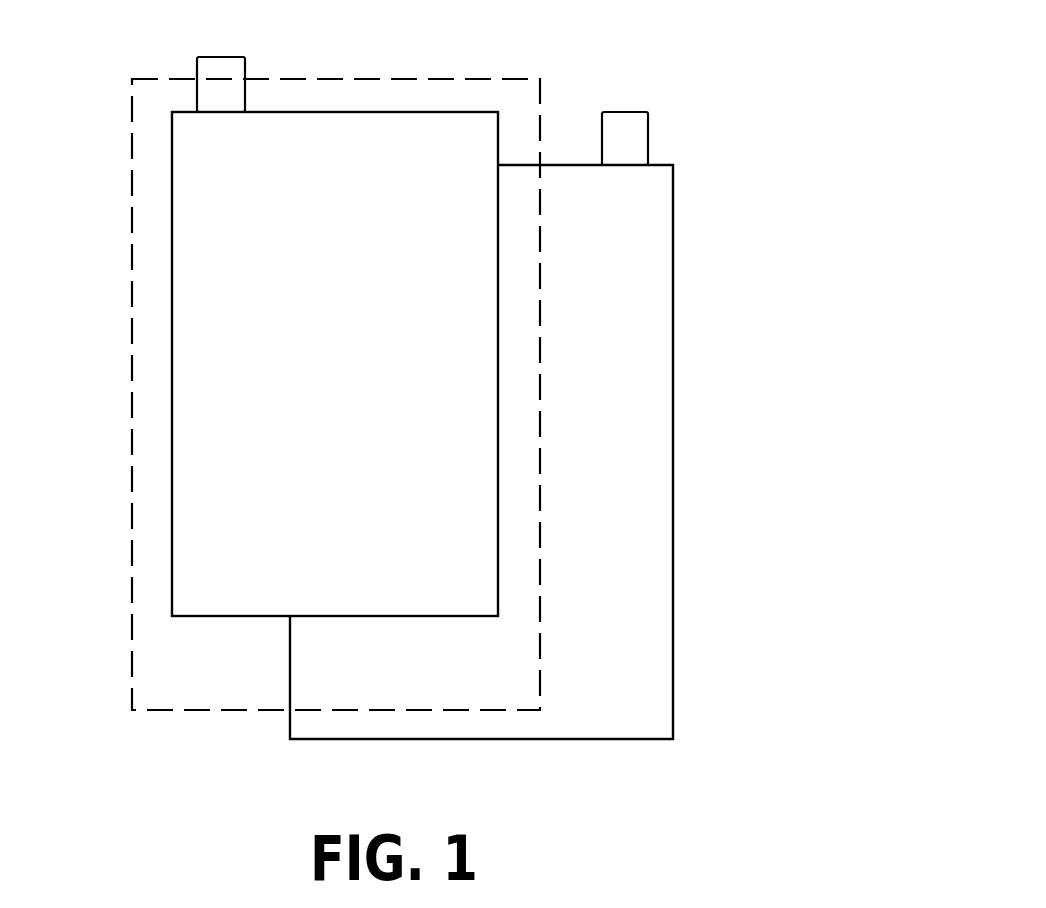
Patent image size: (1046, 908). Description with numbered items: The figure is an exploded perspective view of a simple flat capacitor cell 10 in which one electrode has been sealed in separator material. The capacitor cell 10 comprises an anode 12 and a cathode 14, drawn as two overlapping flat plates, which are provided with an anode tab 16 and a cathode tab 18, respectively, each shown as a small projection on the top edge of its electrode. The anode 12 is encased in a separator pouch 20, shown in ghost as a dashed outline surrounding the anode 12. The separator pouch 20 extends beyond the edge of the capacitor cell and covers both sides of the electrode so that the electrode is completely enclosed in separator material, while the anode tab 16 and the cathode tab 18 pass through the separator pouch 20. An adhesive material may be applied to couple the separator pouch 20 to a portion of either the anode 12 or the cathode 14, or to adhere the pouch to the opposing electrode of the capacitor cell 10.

The capacitor cell 10 is at (724, 251).
The anode 12 is at (449, 160).
The cathode 14 is at (605, 502).
The anode tab 16 is at (223, 97).
The cathode tab 18 is at (631, 149).
The separator pouch 20 is at (130, 617).